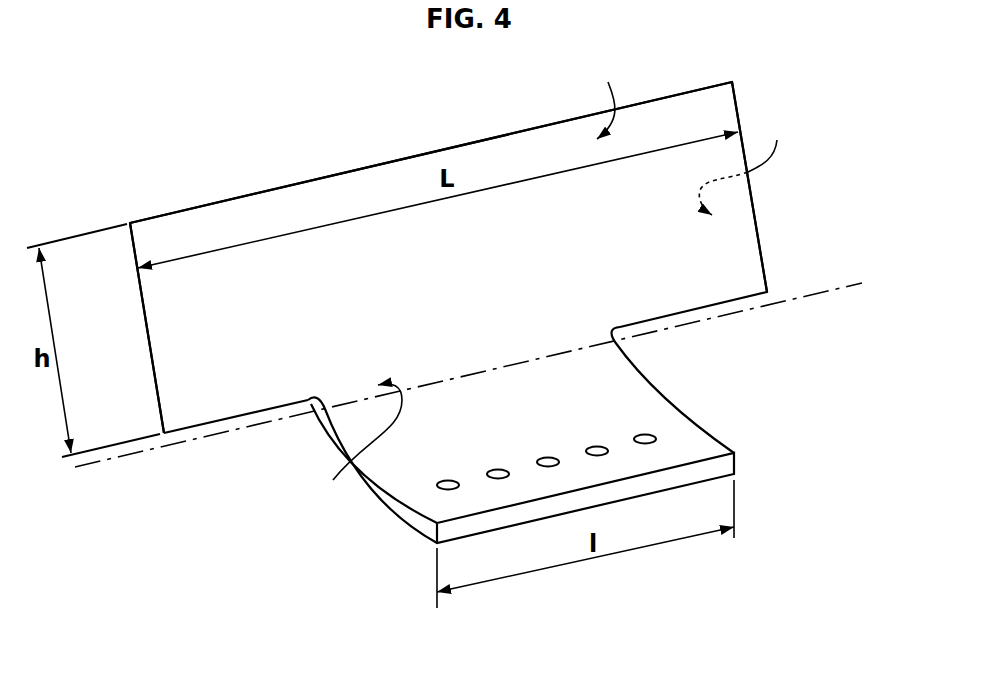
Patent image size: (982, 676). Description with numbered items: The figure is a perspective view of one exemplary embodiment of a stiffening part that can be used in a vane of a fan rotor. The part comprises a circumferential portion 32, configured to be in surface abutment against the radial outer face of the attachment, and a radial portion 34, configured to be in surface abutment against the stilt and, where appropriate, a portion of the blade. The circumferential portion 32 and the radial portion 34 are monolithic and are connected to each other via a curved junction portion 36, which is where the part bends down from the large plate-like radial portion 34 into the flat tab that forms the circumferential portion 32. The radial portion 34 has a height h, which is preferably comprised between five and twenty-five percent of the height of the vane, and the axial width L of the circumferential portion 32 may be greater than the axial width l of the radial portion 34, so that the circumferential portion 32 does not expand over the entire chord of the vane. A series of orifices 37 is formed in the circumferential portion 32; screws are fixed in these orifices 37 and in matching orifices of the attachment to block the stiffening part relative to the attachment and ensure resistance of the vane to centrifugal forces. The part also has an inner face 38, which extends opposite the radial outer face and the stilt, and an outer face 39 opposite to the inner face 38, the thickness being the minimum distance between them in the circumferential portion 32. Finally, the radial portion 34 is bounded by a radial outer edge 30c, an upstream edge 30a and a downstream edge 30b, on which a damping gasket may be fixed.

The upstream edge 30a is at (147, 330).
The downstream edge 30b is at (758, 238).
The radial outer edge 30c is at (383, 165).
The circumferential portion 32 is at (510, 422).
The radial portion 34 is at (614, 98).
The curved junction portion 36 is at (361, 450).
The orifices 37 is at (548, 462).
The inner face 38 is at (744, 165).
The outer face 39 is at (443, 292).